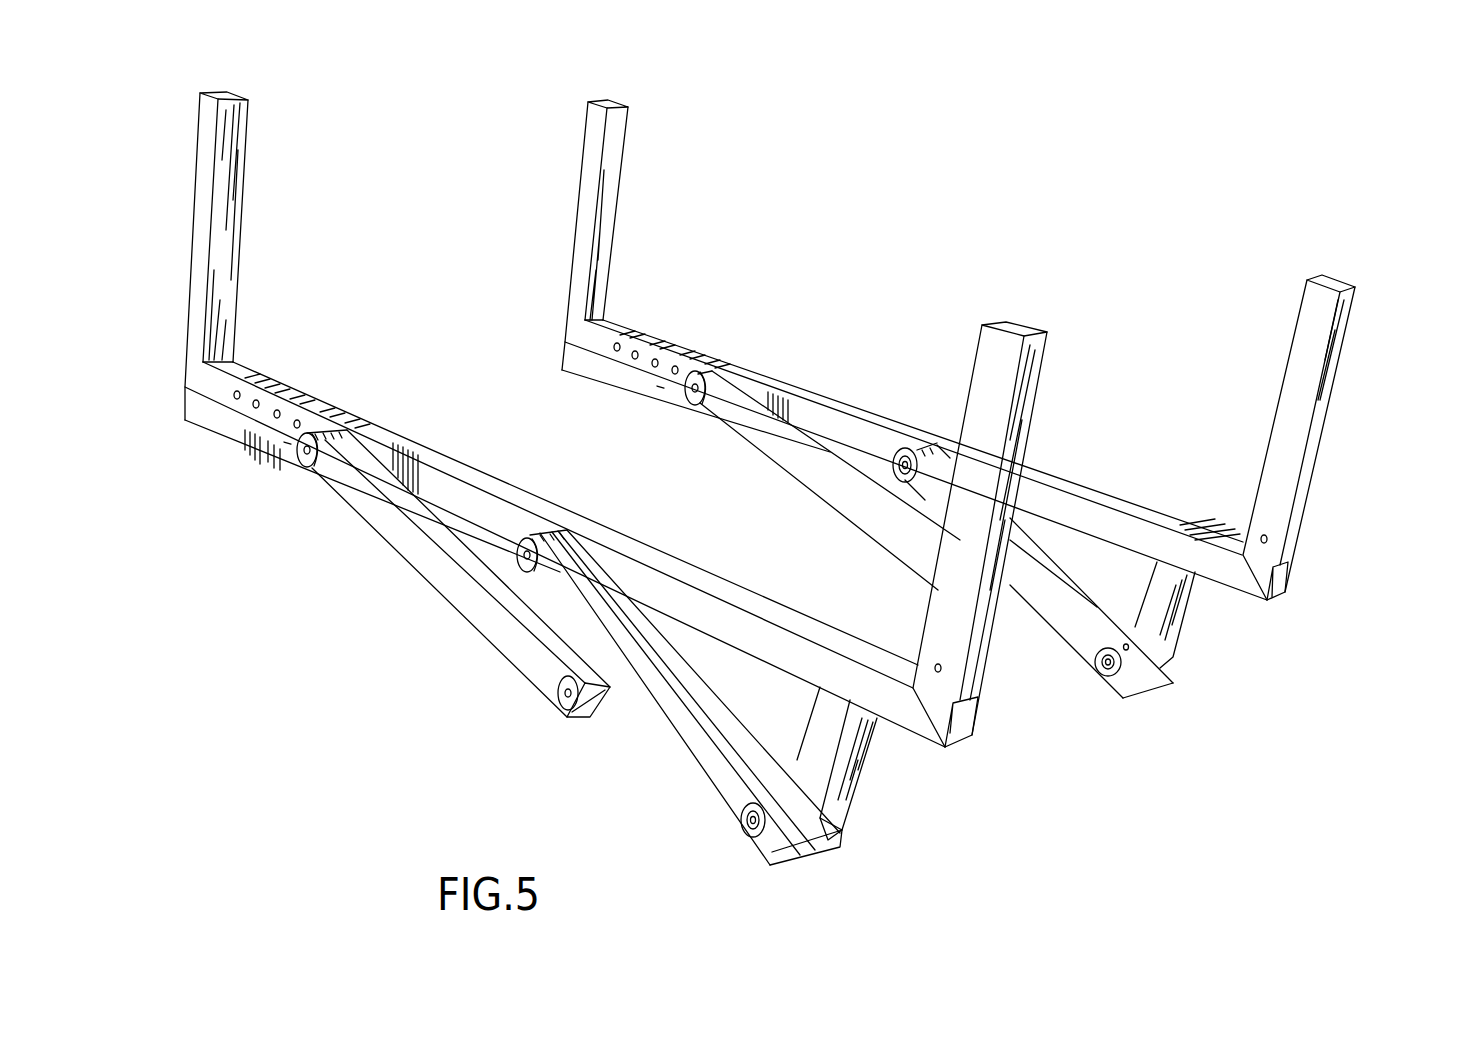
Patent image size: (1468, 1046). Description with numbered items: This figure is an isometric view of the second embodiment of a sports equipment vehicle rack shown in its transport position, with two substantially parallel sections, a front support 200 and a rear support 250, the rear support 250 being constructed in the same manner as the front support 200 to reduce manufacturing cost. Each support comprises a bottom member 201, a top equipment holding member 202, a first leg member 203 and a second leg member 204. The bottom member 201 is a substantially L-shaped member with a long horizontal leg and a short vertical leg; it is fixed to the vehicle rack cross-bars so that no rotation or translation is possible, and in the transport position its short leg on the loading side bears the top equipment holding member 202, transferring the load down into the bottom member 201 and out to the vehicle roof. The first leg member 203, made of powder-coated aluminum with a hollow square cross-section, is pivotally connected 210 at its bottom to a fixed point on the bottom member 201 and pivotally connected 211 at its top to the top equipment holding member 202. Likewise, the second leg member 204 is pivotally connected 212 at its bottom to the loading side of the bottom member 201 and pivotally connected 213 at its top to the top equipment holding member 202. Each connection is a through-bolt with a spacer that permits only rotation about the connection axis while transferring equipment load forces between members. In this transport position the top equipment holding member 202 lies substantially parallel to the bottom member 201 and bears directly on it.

The front support 200 is at (343, 708).
The rear support 250 is at (947, 172).
The bottom member 201 is at (235, 438).
The top equipment holding member 202 is at (205, 198).
The first leg member 203 is at (430, 567).
The second leg member 204 is at (708, 768).
The pivot connection 210 is at (565, 700).
The pivot connection 211 is at (302, 463).
The pivot connection 212 is at (750, 835).
The pivot connection 213 is at (525, 545).